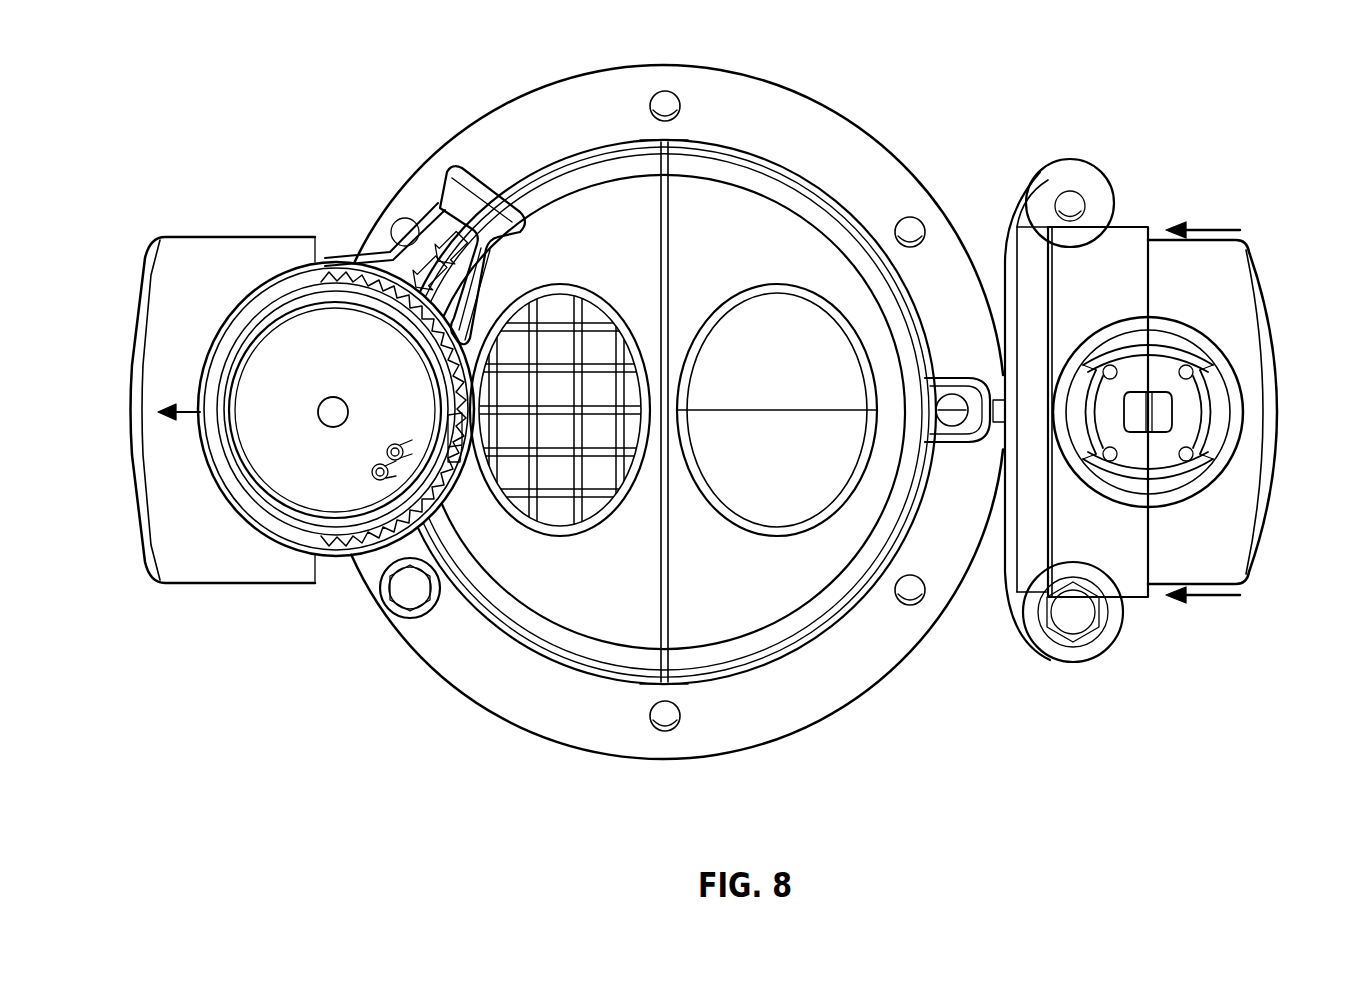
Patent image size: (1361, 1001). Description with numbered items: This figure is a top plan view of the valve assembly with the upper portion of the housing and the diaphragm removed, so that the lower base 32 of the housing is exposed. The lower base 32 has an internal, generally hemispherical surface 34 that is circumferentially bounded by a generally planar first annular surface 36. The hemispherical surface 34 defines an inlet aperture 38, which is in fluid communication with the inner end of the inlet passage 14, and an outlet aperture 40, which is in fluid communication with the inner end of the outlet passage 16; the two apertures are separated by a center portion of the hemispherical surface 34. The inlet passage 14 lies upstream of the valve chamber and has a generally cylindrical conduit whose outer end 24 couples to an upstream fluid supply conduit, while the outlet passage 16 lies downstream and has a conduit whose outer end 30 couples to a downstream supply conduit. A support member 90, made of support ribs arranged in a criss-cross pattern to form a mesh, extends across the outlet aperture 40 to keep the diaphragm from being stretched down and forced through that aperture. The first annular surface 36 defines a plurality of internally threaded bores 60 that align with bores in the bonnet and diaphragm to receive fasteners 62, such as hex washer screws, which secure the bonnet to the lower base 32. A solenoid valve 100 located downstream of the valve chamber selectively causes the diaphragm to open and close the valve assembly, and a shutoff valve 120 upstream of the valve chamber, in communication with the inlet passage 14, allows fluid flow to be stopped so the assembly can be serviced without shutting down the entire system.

The inlet passage 14 is at (1278, 412).
The outlet passage 16 is at (128, 416).
The outer end 24 is at (1268, 550).
The outer end 30 is at (138, 546).
The lower base 32 is at (675, 762).
The generally hemispherical surface 34 is at (742, 602).
The first annular surface 36 is at (752, 718).
The inlet aperture 38 is at (803, 292).
The outlet aperture 40 is at (573, 288).
The bore 60 is at (665, 90).
The fastener 62 is at (404, 600).
The support member 90 is at (603, 320).
The solenoid valve 100 is at (335, 262).
The shutoff valve 120 is at (1178, 329).